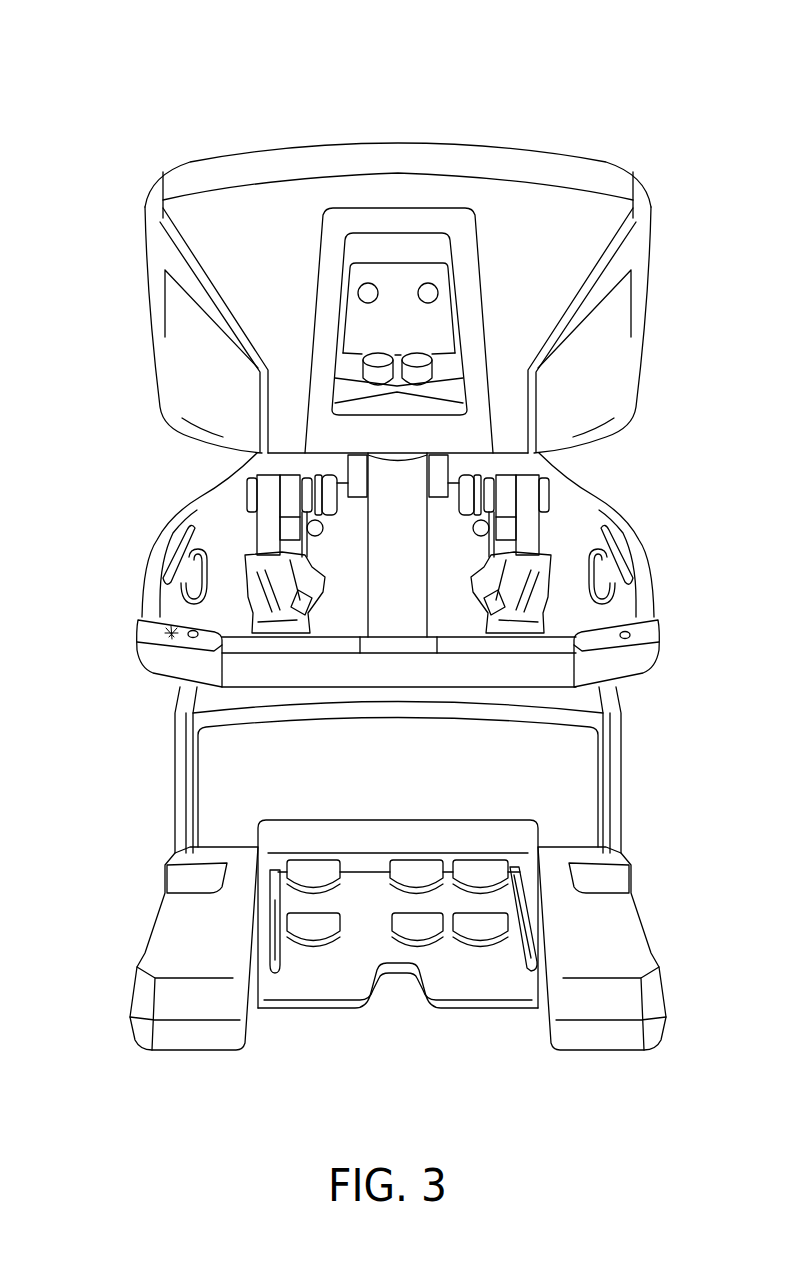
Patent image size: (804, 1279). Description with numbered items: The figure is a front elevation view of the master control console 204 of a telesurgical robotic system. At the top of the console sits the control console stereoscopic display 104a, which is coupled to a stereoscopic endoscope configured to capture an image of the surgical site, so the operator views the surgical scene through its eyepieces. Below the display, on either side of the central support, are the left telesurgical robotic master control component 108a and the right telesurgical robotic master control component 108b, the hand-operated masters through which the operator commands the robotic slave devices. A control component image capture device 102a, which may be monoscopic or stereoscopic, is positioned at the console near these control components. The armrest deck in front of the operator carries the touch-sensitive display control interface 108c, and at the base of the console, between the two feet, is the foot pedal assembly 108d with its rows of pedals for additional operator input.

The master control console 204 is at (650, 55).
The control console stereoscopic display 104a is at (378, 358).
The control component image capture device 102a is at (398, 462).
The left telesurgical robotic master control component 108a is at (250, 568).
The right telesurgical robotic master control component 108b is at (545, 552).
The touch-sensitive display control interface 108c is at (381, 644).
The foot pedal assembly 108d is at (348, 975).